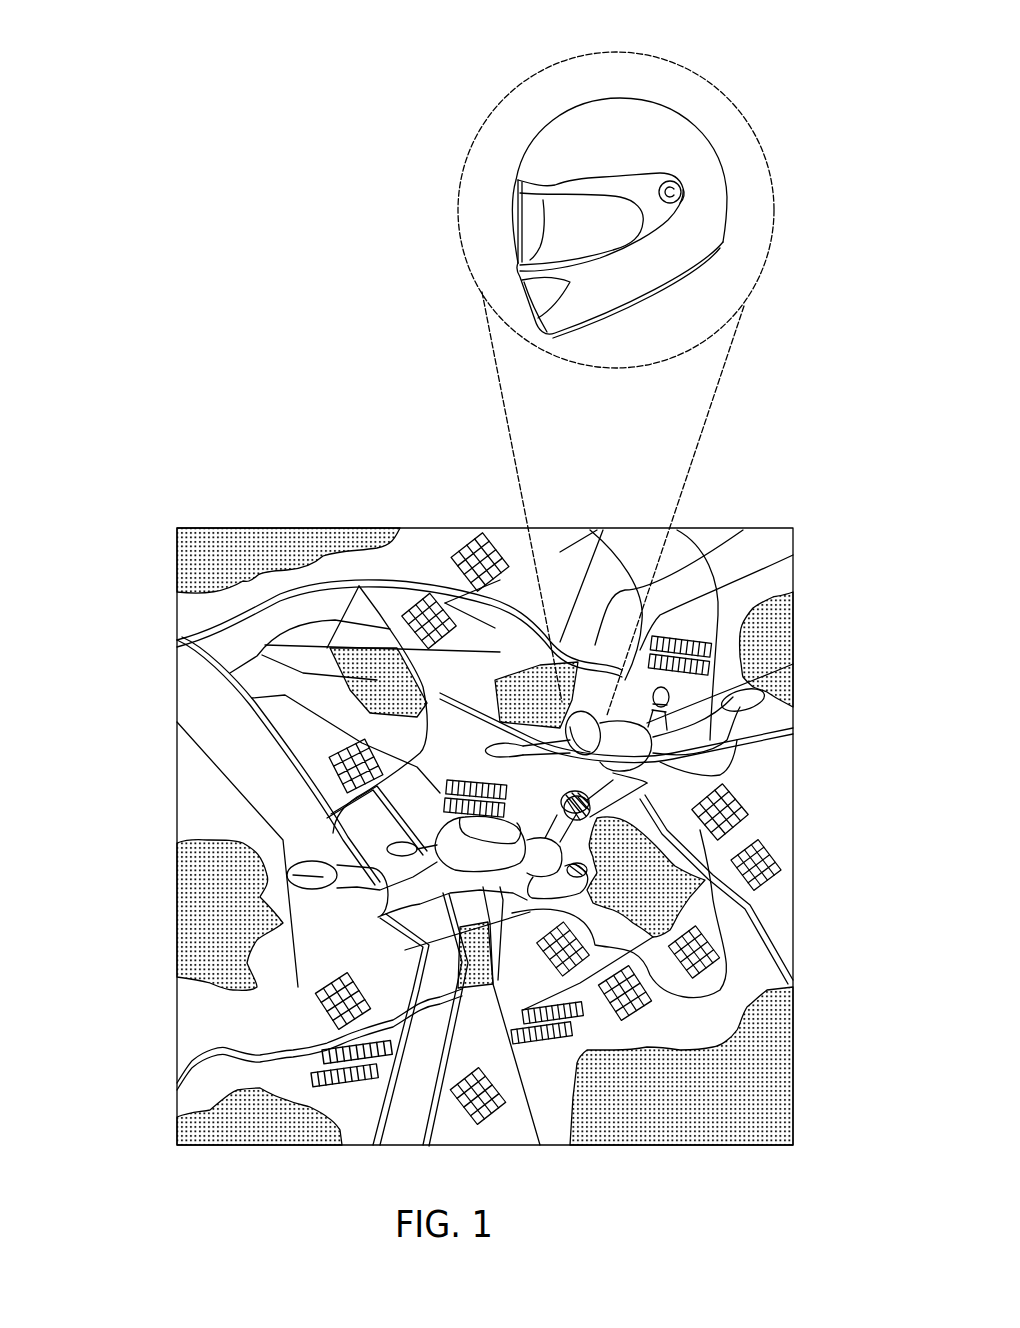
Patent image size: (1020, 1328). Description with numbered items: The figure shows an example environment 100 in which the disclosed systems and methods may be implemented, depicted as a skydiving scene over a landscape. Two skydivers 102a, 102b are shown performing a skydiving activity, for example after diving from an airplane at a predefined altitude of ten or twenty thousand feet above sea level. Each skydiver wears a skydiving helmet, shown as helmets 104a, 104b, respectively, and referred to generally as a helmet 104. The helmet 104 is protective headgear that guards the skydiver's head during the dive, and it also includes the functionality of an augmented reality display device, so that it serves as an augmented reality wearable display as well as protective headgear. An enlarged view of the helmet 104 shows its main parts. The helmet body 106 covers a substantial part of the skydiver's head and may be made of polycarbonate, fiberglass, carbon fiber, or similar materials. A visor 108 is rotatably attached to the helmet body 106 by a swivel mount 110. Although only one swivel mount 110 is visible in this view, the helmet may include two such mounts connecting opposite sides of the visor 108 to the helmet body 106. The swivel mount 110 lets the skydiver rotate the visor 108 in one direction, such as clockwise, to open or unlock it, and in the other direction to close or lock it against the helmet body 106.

The environment 100 is at (156, 426).
The skydiver 102a is at (479, 864).
The skydiver 102b is at (691, 727).
The helmet 104 is at (613, 191).
The skydiving helmet 104a is at (528, 866).
The skydiving helmet 104b is at (602, 712).
The helmet body 106 is at (634, 115).
The visor 108 is at (520, 220).
The swivel mount 110 is at (683, 190).